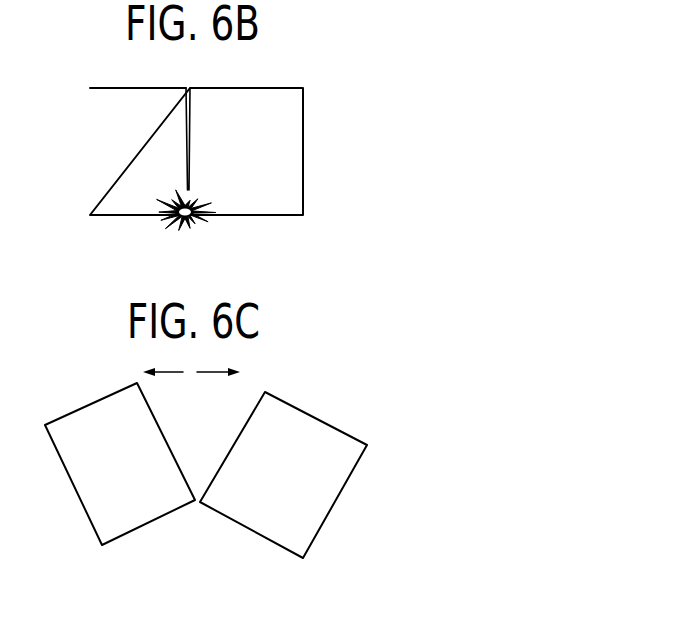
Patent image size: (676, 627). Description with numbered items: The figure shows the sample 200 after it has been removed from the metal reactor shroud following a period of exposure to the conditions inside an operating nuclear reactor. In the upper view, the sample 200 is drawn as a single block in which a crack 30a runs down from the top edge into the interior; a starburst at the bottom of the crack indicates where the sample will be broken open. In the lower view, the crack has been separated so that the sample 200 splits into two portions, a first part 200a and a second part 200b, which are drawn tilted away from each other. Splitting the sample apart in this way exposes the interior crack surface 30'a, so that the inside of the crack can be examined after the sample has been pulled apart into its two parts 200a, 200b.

In FIG. 6B, the sample 200 is at (303, 112).
In FIG. 6B, the crack 30a is at (188, 88).
In FIG. 6C, the sample part 200a is at (125, 535).
In FIG. 6C, the sample part 200b is at (263, 537).
In FIG. 6C, the interior crack surface 30'a is at (264, 394).